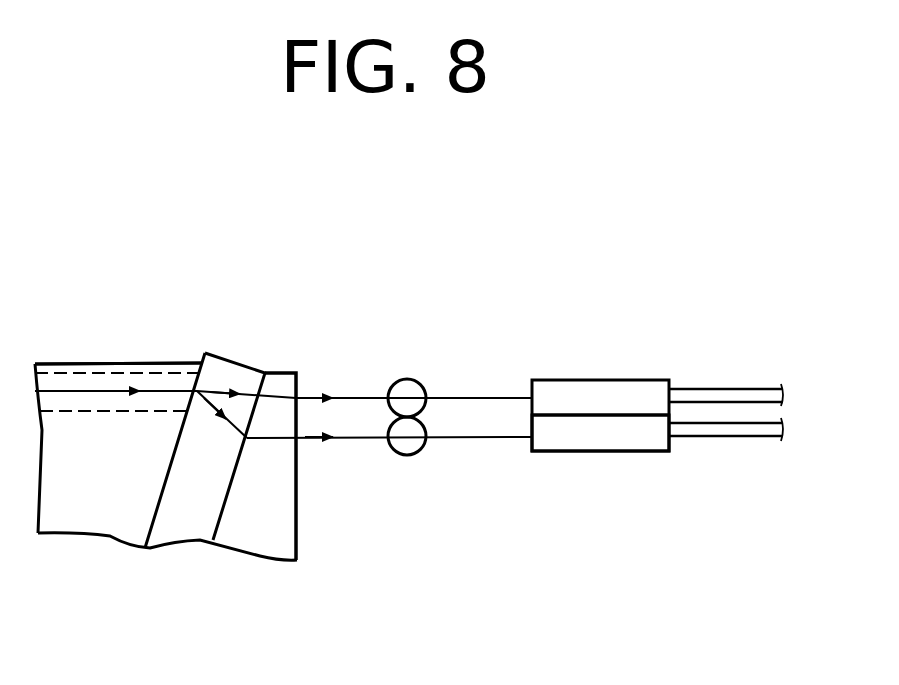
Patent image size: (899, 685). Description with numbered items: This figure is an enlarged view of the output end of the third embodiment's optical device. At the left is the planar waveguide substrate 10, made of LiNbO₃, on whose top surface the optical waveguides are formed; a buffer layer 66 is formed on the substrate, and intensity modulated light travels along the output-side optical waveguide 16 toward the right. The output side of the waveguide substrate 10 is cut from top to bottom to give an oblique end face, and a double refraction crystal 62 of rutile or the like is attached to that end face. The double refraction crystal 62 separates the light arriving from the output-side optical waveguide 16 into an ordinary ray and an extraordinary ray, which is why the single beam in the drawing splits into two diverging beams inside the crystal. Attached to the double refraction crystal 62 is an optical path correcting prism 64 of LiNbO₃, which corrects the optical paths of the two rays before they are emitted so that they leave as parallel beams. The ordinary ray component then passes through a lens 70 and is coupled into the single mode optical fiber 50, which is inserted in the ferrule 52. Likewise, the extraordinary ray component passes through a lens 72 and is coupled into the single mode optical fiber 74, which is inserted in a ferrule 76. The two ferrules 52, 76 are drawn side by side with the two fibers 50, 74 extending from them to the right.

The planar waveguide substrate 10 is at (52, 363).
The output-side optical waveguide 16 is at (84, 378).
The buffer layer 66 is at (148, 363).
The double refraction crystal 62 is at (228, 368).
The optical path correcting prism 64 is at (283, 516).
The lens 70 is at (408, 380).
The lens 72 is at (407, 455).
The ferrule 52 is at (578, 388).
The ferrule 76 is at (611, 444).
The single mode optical fiber 50 is at (718, 395).
The single mode optical fiber 74 is at (728, 440).